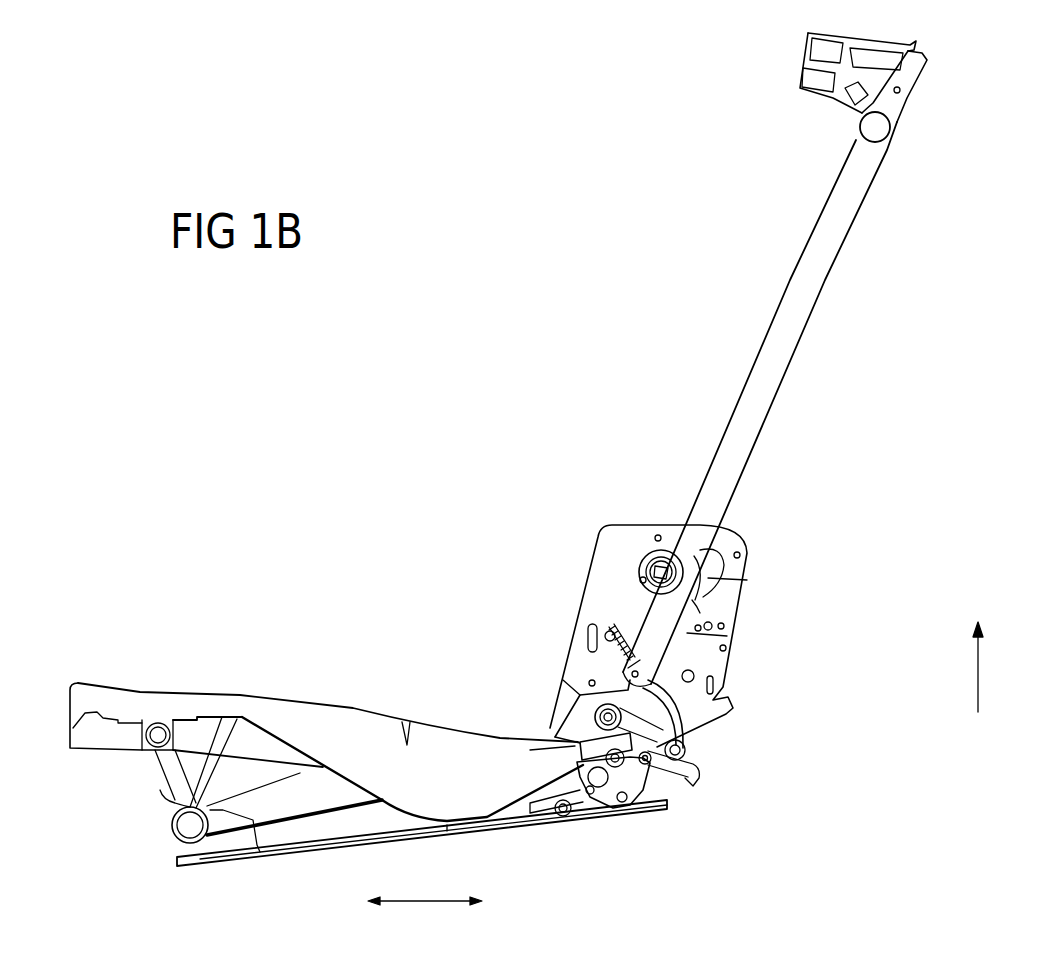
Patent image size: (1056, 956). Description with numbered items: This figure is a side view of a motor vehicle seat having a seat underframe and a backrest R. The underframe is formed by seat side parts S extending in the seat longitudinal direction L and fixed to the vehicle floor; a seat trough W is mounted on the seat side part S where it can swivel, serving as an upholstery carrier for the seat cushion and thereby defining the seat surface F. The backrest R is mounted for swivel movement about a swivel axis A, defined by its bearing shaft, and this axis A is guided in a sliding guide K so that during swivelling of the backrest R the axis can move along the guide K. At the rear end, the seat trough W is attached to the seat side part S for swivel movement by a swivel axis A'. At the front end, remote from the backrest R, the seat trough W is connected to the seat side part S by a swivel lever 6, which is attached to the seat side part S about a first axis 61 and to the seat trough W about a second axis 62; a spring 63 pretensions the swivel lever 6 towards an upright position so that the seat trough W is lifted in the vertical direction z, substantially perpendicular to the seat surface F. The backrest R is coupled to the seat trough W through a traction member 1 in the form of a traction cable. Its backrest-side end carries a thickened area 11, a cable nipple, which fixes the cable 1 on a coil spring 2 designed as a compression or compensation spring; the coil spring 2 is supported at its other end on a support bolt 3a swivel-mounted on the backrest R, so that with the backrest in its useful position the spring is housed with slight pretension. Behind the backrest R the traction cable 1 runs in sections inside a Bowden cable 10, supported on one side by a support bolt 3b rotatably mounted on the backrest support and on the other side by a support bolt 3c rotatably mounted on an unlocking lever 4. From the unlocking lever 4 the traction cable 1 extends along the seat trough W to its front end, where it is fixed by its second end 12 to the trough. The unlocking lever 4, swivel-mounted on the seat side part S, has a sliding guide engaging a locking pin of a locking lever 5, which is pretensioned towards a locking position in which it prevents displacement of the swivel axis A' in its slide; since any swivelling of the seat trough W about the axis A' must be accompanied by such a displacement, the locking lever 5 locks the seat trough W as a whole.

The traction member 1 is at (300, 817).
The coil spring 2 is at (636, 651).
The support bolt 3a is at (660, 646).
The support bolt 3b is at (686, 750).
The support bolt 3c is at (669, 780).
The unlocking lever 4 is at (610, 808).
The locking lever 5 is at (575, 812).
The swivel lever 6 is at (168, 774).
The Bowden cable 10 is at (696, 782).
The thickened area 11 is at (628, 663).
The second end 12 is at (221, 716).
The first axis 61 is at (180, 840).
The second axis 62 is at (152, 722).
The spring 63 is at (165, 805).
The swivel axis A is at (642, 531).
The swivel axis A' is at (565, 716).
The seat surface F is at (363, 712).
The sliding guide K is at (722, 552).
The backrest R is at (789, 354).
The seat side part S is at (236, 851).
The seat trough W is at (407, 768).
The seat longitudinal direction L is at (425, 885).
The vertical direction z is at (990, 667).